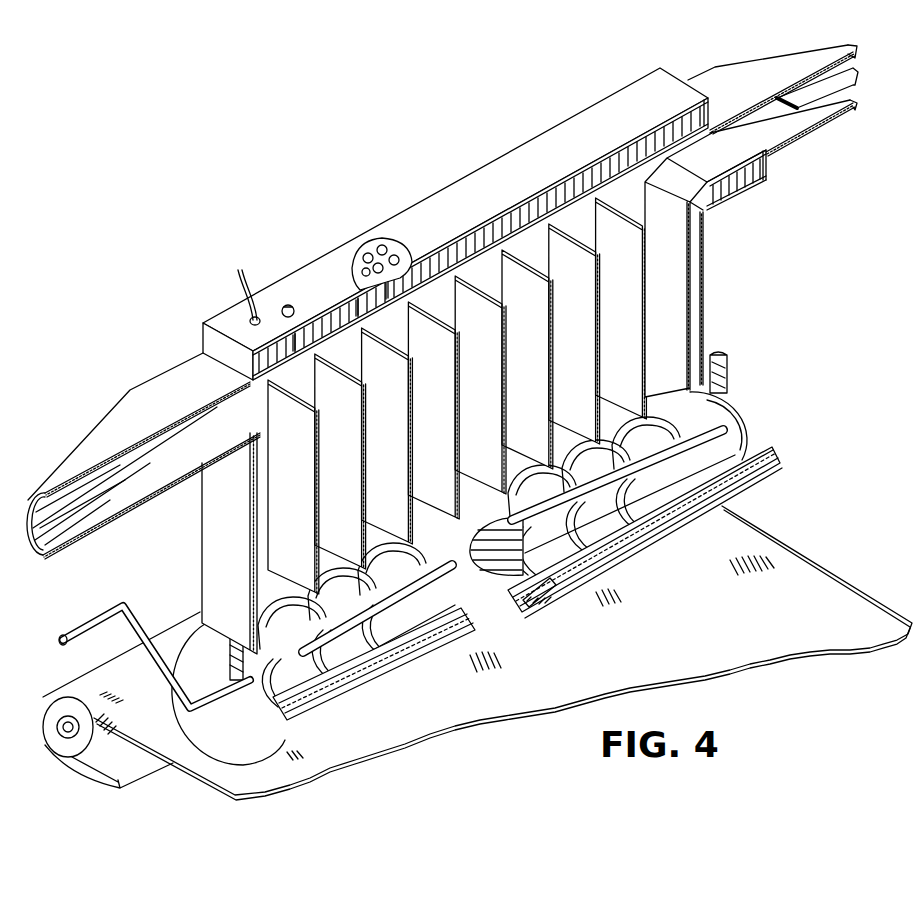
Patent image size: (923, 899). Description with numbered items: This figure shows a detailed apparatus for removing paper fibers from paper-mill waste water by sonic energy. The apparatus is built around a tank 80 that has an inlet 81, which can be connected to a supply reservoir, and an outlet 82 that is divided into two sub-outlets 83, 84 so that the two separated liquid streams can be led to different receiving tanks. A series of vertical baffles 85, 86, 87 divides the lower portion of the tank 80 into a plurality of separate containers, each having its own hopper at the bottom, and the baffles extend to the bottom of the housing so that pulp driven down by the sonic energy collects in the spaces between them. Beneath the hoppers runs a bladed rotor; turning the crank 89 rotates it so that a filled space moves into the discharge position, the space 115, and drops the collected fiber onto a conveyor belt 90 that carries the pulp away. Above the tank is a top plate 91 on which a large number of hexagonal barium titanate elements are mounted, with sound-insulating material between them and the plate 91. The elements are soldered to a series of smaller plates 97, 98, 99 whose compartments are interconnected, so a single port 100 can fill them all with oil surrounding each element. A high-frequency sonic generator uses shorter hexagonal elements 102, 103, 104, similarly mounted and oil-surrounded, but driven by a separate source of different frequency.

The tank 80 is at (222, 540).
The inlet 81 is at (167, 385).
The outlet 82 is at (750, 75).
The sub-outlet 83 is at (850, 55).
The sub-outlet 84 is at (852, 102).
The vertical baffle 85 is at (321, 487).
The vertical baffle 86 is at (367, 452).
The vertical baffle 87 is at (414, 427).
The crank 89 is at (92, 615).
The conveyor belt 90 is at (818, 580).
The top plate 91 is at (606, 106).
The plate 97 is at (295, 357).
The plate 98 is at (358, 333).
The plate 99 is at (388, 306).
The port 100 is at (291, 306).
The hexagonal element 102 is at (737, 206).
The hexagonal element 103 is at (748, 194).
The hexagonal element 104 is at (768, 183).
The space 115 is at (487, 572).